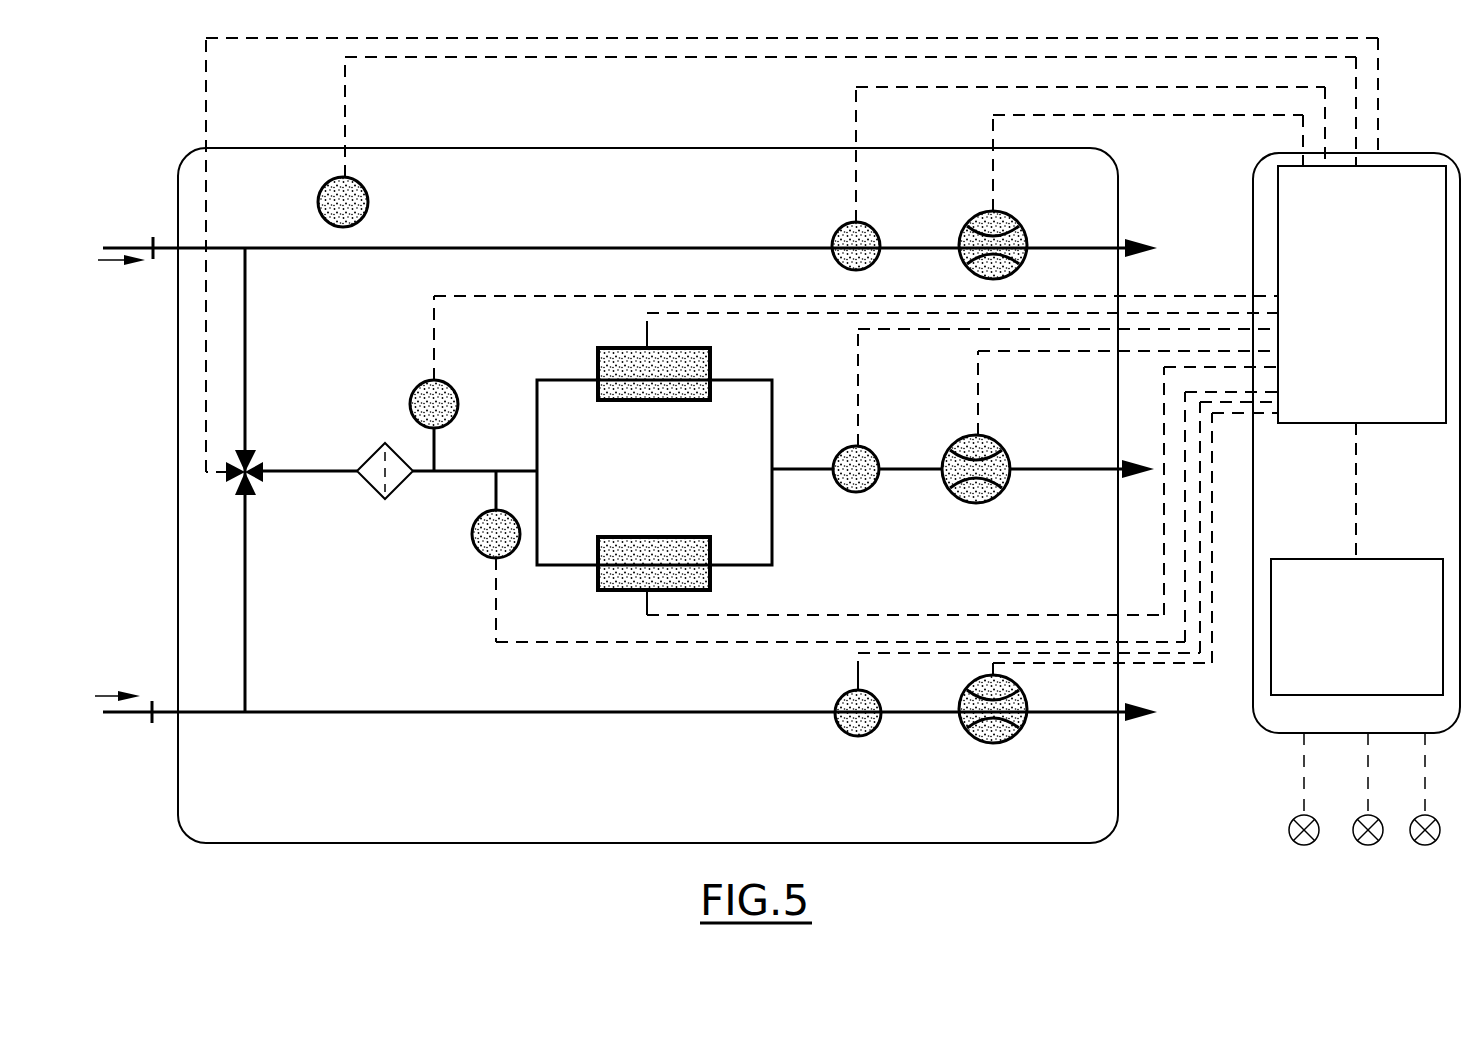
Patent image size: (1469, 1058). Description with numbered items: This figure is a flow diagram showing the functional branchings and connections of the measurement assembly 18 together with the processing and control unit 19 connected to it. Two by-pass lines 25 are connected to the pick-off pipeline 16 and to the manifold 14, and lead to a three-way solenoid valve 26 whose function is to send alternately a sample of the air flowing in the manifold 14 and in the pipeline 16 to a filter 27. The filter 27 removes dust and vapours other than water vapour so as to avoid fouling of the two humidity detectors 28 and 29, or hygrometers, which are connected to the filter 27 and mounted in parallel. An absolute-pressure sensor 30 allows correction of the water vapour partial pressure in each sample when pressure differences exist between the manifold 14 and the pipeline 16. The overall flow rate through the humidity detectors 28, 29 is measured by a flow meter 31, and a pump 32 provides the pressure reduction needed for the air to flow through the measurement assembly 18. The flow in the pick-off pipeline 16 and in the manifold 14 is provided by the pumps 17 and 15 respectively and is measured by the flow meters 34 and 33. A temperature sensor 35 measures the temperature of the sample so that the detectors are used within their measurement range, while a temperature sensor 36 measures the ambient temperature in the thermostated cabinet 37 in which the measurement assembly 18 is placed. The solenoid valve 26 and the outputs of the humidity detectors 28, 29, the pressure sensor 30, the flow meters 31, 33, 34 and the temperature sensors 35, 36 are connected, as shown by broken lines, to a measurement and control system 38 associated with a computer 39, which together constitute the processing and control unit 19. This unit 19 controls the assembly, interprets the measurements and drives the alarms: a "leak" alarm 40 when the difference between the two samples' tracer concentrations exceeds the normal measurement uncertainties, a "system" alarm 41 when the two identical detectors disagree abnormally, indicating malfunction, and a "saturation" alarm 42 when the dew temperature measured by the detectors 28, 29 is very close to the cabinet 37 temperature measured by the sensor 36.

The manifold 14 is at (455, 709).
The pump 15 is at (1020, 738).
The pick-off pipeline 16 is at (640, 245).
The pump 17 is at (1027, 217).
The measurement assembly 18 is at (606, 791).
The processing and control unit 19 is at (1427, 150).
The by-pass lines 25 is at (252, 396).
The three-way solenoid valve 26 is at (226, 484).
The filter 27 is at (385, 503).
The humidity detector 28 is at (615, 404).
The humidity detector 29 is at (690, 532).
The absolute-pressure sensor 30 is at (478, 556).
The flow meter 31 is at (842, 447).
The pump 32 is at (1010, 446).
The flow meter 33 is at (830, 733).
The flow meter 34 is at (832, 228).
The temperature sensor 35 is at (410, 388).
The temperature sensor 36 is at (312, 193).
The cabinet 37 is at (410, 852).
The measurement and control system 38 is at (1418, 428).
The computer 39 is at (1300, 556).
The leak alarm 40 is at (1304, 847).
The system alarm 41 is at (1368, 847).
The saturation alarm 42 is at (1425, 847).